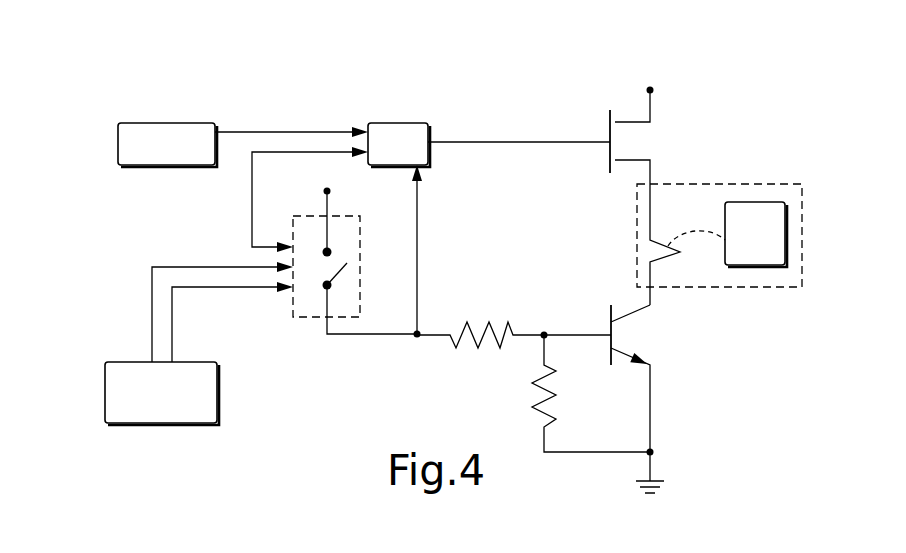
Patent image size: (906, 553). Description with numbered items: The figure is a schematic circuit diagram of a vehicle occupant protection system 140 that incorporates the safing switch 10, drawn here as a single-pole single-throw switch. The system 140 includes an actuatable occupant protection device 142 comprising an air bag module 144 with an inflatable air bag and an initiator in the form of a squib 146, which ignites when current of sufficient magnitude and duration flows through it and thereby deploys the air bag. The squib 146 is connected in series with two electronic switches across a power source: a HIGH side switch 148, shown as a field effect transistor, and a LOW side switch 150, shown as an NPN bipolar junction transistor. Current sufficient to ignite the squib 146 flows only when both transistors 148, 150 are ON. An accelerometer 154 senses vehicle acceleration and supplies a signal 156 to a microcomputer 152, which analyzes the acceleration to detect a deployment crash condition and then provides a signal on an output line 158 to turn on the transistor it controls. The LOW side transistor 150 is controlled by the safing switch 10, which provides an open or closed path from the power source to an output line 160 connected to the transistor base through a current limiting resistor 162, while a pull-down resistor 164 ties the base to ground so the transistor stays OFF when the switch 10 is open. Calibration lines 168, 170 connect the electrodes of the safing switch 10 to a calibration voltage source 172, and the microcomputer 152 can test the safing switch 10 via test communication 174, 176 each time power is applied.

The system 140 is at (198, 55).
The accelerometer 154 is at (151, 126).
The signal 156 is at (297, 128).
The microcomputer 152 is at (398, 122).
The test communication 174 is at (250, 210).
The output line 158 is at (577, 140).
The HIGH side switch 148 is at (664, 136).
The occupant protection device 142 is at (748, 288).
The air bag module 144 is at (727, 211).
The squib 146 is at (670, 258).
The LOW side switch 150 is at (664, 341).
The current limiting resistor 162 is at (492, 321).
The pull-down resistor 164 is at (538, 390).
The output line 160 is at (383, 337).
The test communication 176 is at (420, 221).
The safing switch 10 is at (356, 282).
The calibration line 168 is at (152, 318).
The calibration line 170 is at (172, 318).
The calibration voltage source 172 is at (112, 375).